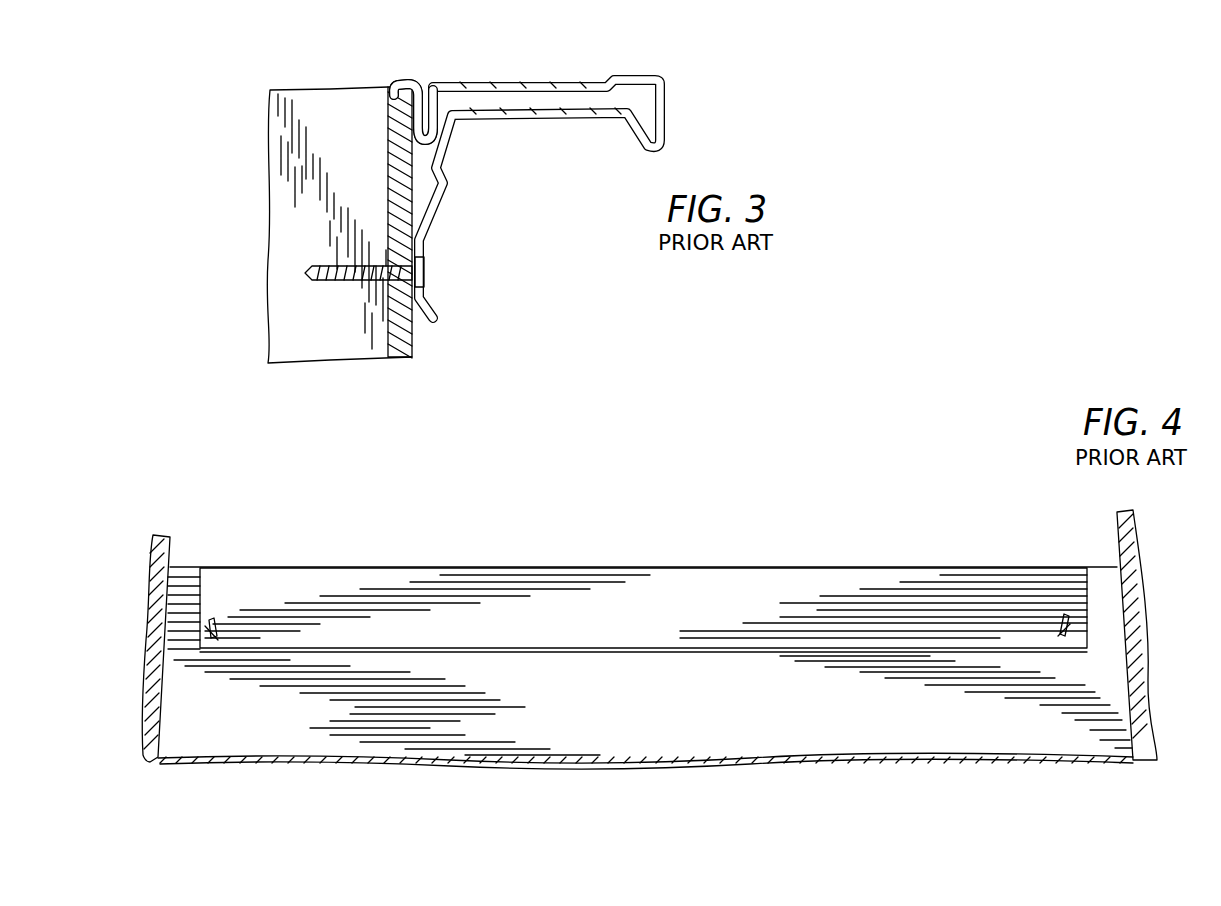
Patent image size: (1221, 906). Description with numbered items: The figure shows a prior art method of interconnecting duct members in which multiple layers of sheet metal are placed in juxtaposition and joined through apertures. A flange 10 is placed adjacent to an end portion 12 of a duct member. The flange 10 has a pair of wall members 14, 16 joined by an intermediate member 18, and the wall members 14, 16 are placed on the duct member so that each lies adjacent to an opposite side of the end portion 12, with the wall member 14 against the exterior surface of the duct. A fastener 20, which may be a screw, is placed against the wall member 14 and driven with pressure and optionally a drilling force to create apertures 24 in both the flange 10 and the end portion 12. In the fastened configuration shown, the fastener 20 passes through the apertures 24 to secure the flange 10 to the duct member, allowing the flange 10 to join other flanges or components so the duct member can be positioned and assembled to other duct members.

In FIG. 3, the flange 10 is at (524, 170).
In FIG. 4, the flange 10 is at (662, 508).
In FIG. 4, the end portion 12 is at (207, 728).
In FIG. 3, the wall member 14 is at (421, 258).
In FIG. 3, the wall member 16 is at (386, 155).
In FIG. 4, the wall member 16 is at (540, 617).
In FIG. 3, the intermediate member 18 is at (407, 82).
In FIG. 3, the fastener 20 is at (333, 280).
In FIG. 4, the fastener 20 is at (208, 620).
In FIG. 3, the apertures 24 is at (388, 258).
In FIG. 4, the apertures 24 is at (233, 630).